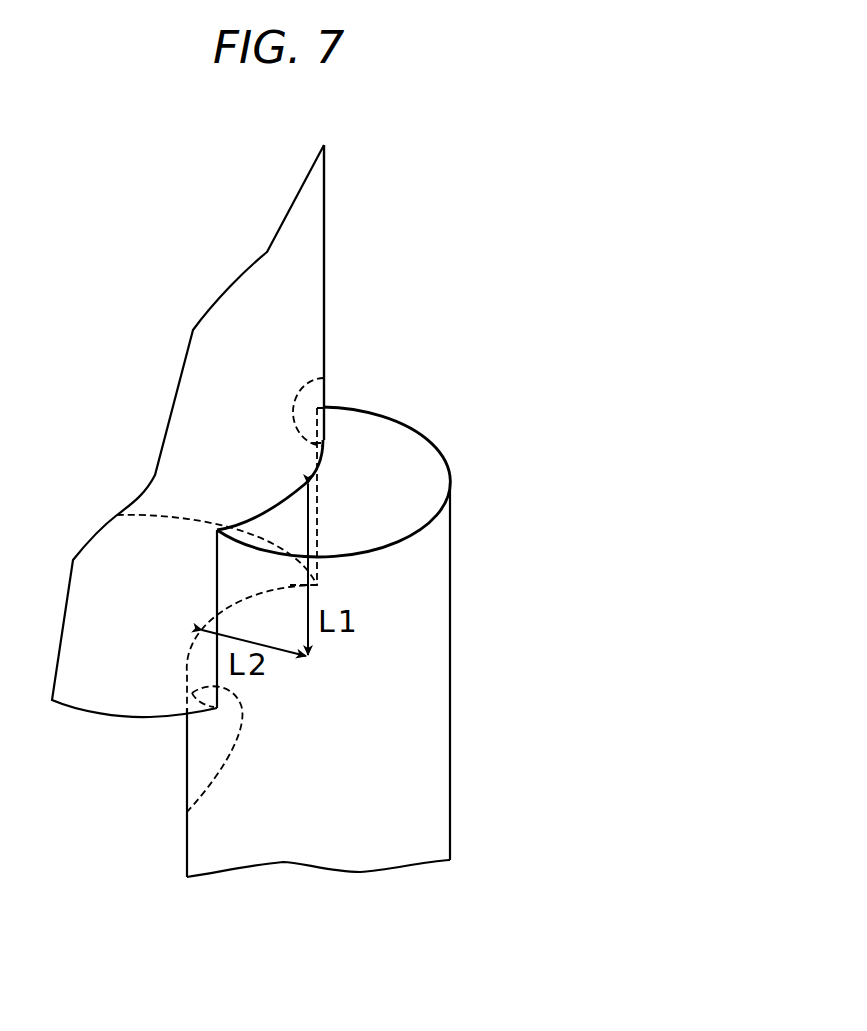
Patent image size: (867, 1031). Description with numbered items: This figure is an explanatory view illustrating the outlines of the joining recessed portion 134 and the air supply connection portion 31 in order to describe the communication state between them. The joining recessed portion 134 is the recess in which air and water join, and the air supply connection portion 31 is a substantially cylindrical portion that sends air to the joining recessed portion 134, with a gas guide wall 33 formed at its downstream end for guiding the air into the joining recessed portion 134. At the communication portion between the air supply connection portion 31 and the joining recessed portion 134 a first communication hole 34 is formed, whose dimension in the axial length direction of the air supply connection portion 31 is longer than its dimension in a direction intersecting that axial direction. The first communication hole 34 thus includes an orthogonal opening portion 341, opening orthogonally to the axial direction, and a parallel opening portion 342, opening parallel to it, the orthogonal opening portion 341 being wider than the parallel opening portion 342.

The air supply connection portion 31 is at (425, 693).
The gas guide wall 33 is at (407, 510).
The first communication hole 34 is at (288, 470).
The joining recessed portion 134 is at (310, 232).
The orthogonal opening portion 341 is at (330, 376).
The parallel opening portion 342 is at (187, 812).